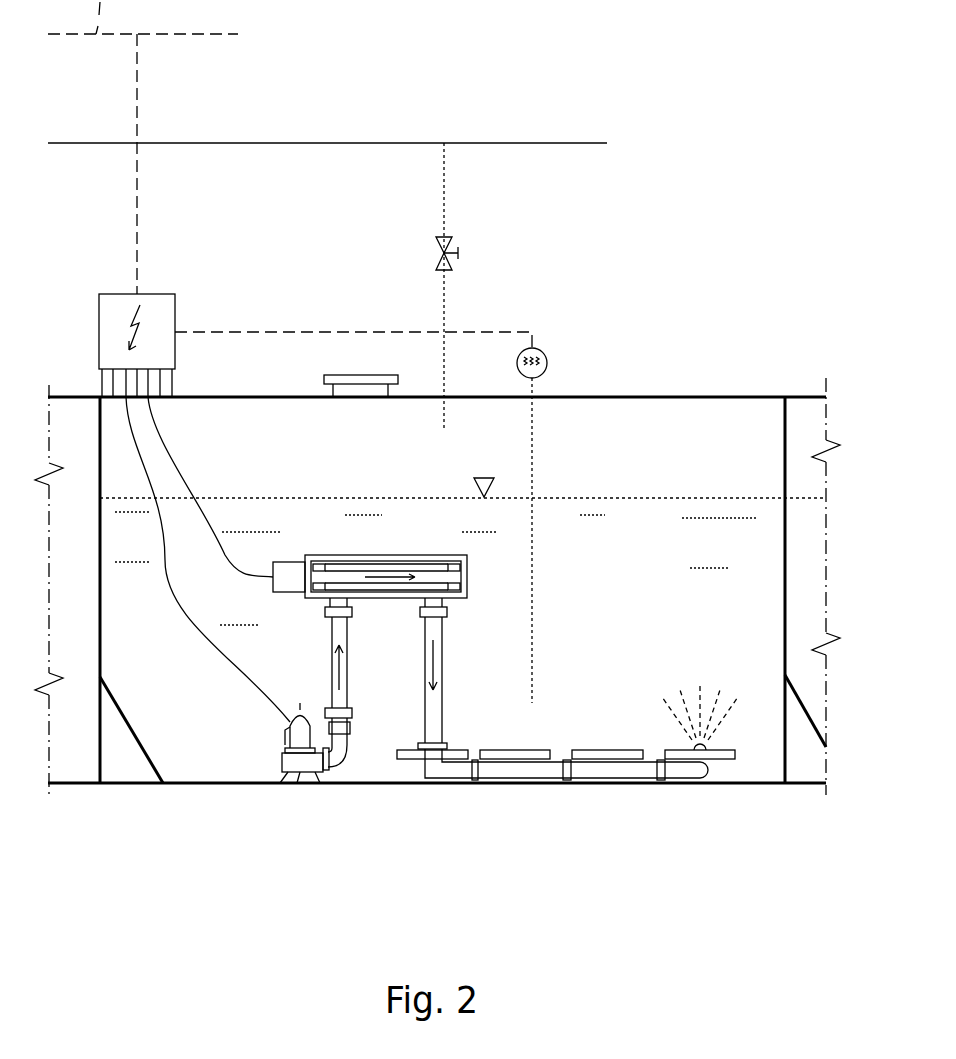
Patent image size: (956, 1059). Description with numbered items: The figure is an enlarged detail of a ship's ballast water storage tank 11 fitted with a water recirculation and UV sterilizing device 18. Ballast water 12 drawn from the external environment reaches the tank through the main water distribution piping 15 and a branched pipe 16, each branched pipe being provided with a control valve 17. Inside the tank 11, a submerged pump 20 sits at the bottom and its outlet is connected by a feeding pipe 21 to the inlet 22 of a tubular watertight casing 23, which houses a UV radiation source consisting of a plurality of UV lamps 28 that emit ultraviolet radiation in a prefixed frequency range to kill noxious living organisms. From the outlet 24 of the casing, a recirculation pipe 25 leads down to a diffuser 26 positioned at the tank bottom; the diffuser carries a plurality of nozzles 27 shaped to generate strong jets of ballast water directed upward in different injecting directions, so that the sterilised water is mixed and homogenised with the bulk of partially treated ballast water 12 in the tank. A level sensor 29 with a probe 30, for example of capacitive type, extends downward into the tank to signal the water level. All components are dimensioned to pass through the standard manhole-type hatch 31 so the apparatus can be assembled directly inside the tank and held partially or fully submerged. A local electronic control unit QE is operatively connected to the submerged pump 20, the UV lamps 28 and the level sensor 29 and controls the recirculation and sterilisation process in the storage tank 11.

The local electronic control unit QE is at (157, 307).
The storage tank 11 is at (730, 420).
The ballast water 12 is at (760, 577).
The main water distribution piping 15 is at (286, 143).
The branched pipe 16 is at (444, 190).
The control valve 17 is at (455, 240).
The recirculation and UV sterilizing device 18 is at (414, 820).
The submerged pump 20 is at (297, 772).
The feeding pipe 21 is at (330, 673).
The inlet 22 is at (325, 603).
The tubular watertight casing 23 is at (382, 515).
The outlet 24 is at (448, 603).
The recirculation pipe 25 is at (433, 700).
The diffuser 26 is at (567, 773).
The nozzles 27 is at (607, 752).
The UV lamps 28 is at (411, 565).
The level sensor 29 is at (541, 351).
The probe 30 is at (533, 435).
The hatch 31 is at (345, 375).